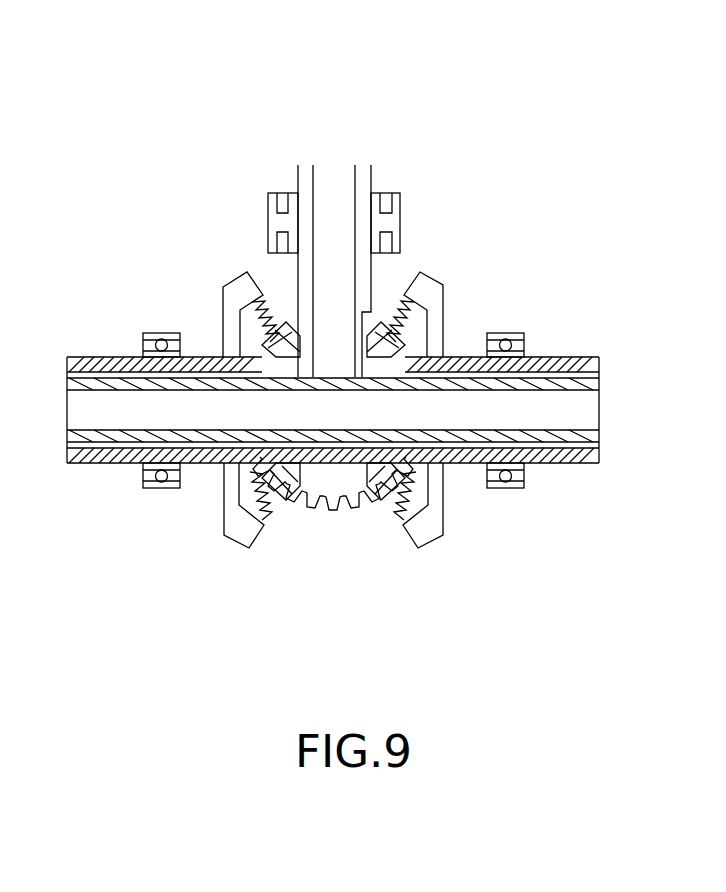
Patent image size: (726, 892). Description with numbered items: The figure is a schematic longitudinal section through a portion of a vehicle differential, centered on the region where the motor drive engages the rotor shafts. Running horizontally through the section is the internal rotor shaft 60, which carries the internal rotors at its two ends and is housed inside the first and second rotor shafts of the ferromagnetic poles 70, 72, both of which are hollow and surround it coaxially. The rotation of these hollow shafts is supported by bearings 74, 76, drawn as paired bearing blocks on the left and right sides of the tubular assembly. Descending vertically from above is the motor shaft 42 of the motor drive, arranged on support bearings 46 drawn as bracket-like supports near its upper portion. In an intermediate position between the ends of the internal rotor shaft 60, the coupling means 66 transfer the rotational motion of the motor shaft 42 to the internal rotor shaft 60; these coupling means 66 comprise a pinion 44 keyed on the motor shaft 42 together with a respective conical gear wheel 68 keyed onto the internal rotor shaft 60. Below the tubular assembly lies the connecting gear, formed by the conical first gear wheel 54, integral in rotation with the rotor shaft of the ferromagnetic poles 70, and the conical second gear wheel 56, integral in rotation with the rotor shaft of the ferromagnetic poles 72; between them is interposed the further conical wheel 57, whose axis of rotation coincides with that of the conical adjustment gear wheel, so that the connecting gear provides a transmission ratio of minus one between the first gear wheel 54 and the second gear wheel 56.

The motor shaft 42 is at (372, 163).
The pinion 44 is at (295, 330).
The support bearings 46 is at (402, 195).
The first gear wheel 54 is at (240, 547).
The second gear wheel 56 is at (430, 548).
The further conical wheel 57 is at (320, 510).
The internal rotor shaft 60 is at (578, 430).
The coupling means 66 is at (387, 332).
The conical gear wheel 68 is at (380, 470).
The first rotor shaft of the ferromagnetic poles 70 is at (92, 468).
The second rotor shaft of the ferromagnetic poles 72 is at (578, 463).
The bearing 74 is at (150, 332).
The bearing 76 is at (516, 330).